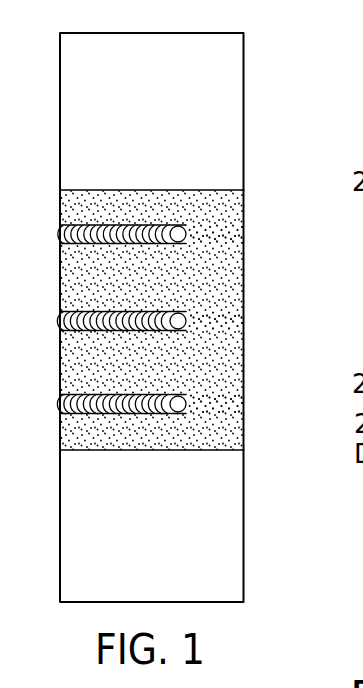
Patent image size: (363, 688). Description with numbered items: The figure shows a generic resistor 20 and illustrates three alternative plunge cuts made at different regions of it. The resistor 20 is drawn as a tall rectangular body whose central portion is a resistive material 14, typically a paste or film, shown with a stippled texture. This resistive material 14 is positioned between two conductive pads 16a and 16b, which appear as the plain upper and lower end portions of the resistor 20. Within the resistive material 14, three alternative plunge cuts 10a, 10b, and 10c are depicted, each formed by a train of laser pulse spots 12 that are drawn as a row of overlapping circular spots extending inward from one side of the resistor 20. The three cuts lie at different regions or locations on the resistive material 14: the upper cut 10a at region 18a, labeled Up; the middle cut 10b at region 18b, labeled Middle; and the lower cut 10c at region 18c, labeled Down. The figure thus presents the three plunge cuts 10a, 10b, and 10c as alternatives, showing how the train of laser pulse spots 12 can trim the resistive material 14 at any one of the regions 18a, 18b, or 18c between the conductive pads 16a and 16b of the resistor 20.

The generic resistor 20 is at (177, 304).
The conductive pad 16a is at (232, 144).
The conductive pad 16b is at (232, 516).
The resistive material 14 is at (70, 204).
The laser pulse spots 12 is at (124, 317).
The plunge cut 10a is at (186, 231).
The plunge cut 10b is at (186, 318).
The plunge cut 10c is at (186, 401).
The region 18a is at (213, 237).
The region 18b is at (210, 324).
The region 18c is at (212, 409).